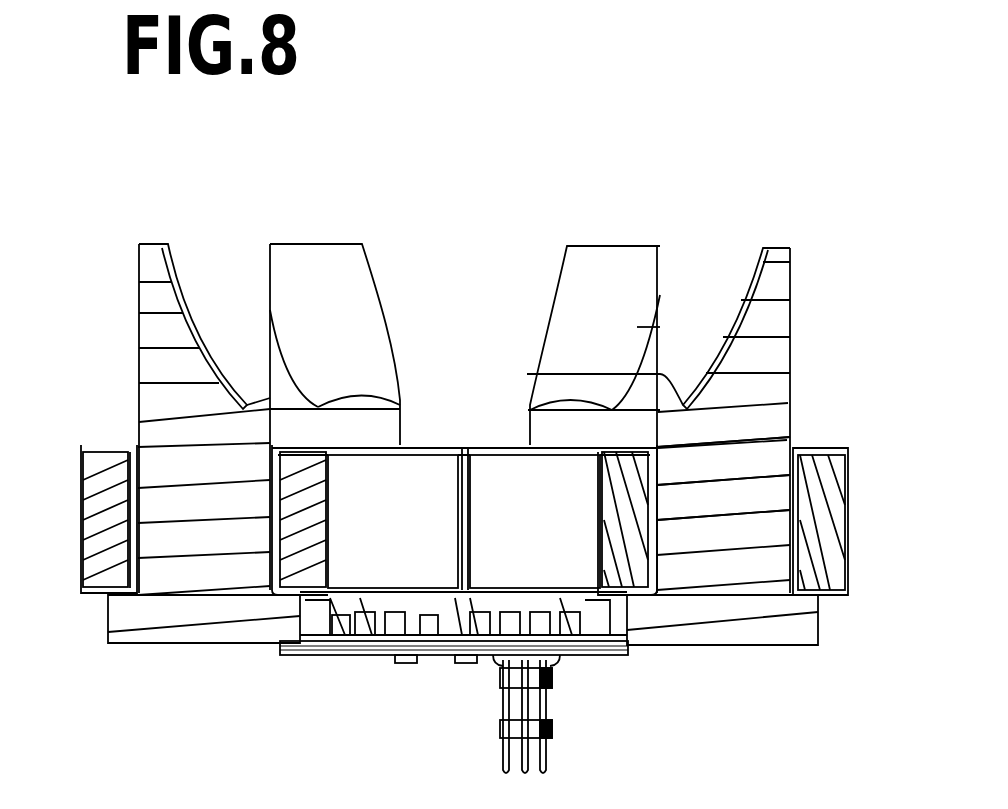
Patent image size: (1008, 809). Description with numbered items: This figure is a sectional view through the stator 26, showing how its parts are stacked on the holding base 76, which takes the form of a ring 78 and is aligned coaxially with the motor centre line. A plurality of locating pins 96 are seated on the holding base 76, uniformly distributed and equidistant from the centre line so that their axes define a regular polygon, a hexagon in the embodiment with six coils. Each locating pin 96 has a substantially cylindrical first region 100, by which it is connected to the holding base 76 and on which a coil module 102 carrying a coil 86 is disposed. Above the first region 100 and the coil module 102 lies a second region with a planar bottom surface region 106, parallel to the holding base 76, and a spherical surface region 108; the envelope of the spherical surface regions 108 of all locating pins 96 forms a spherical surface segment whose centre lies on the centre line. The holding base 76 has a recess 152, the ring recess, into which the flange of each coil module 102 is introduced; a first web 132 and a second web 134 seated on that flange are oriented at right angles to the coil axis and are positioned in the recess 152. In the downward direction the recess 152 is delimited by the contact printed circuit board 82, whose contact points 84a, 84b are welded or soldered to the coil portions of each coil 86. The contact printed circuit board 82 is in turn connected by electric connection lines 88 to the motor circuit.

The stator 26 is at (470, 190).
The locating pin 96 is at (612, 280).
The spherical surface region 108 is at (733, 340).
The bottom surface region 106 is at (557, 402).
The first region 100 is at (757, 503).
The coil 86 is at (838, 572).
The coil module 102 is at (70, 570).
The contact point 84a is at (340, 653).
The contact point 84b is at (428, 652).
The holding base 76 is at (157, 615).
The ring 78 is at (755, 638).
The contact printed circuit board 82 is at (310, 665).
The first web 132 is at (405, 652).
The second web 134 is at (465, 652).
The recess 152 is at (622, 652).
The electric connection line 88 is at (546, 762).